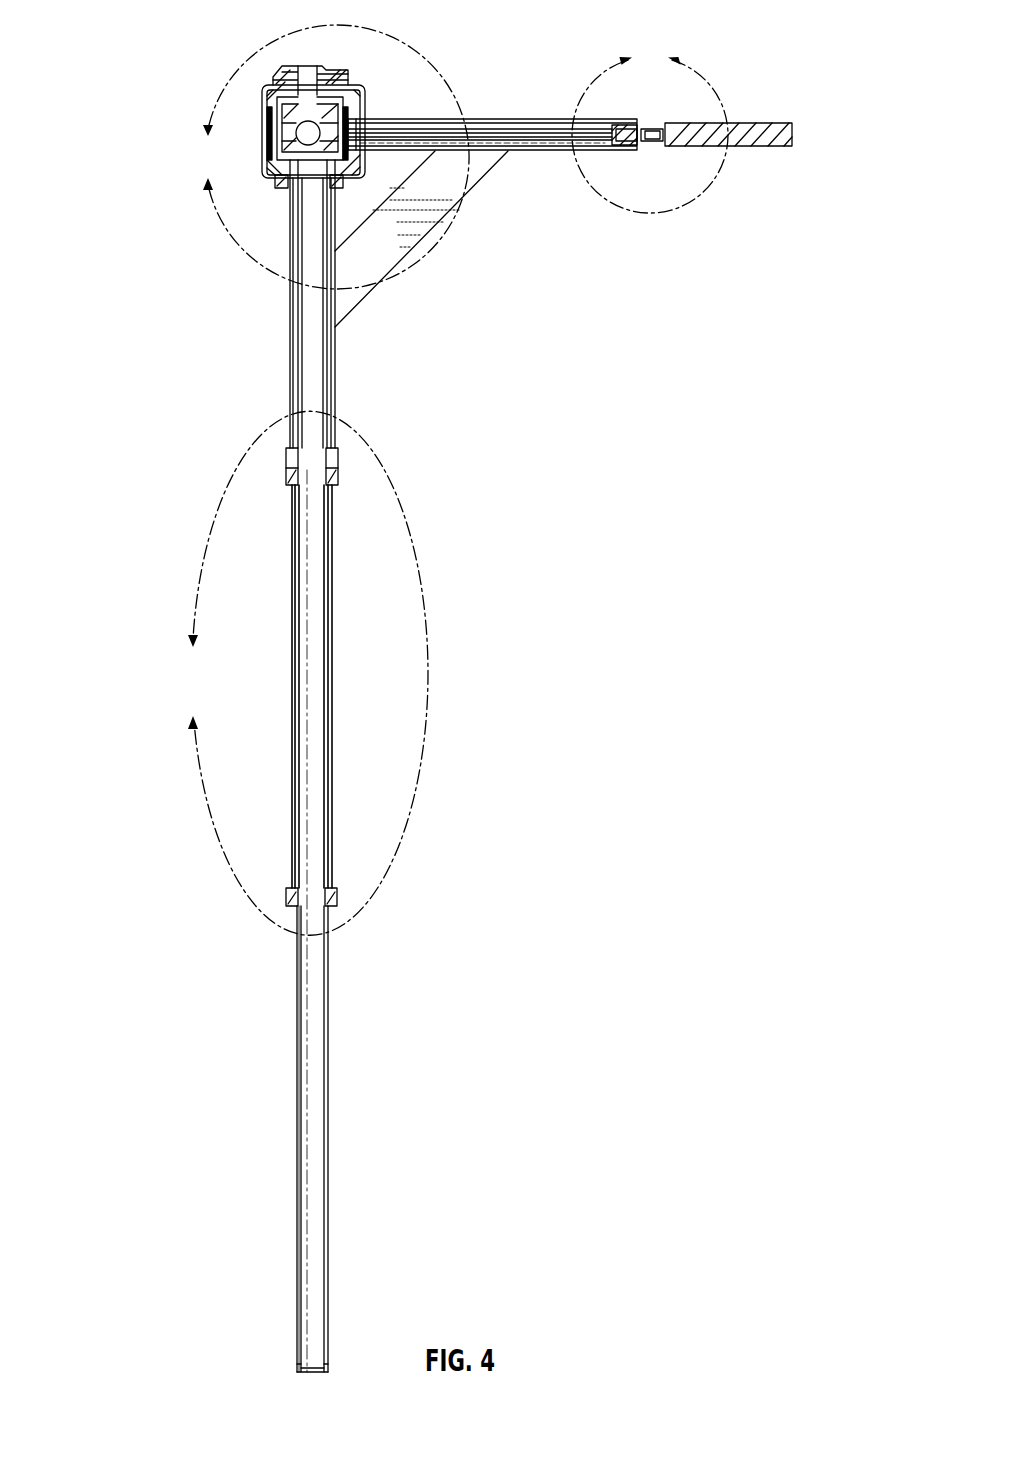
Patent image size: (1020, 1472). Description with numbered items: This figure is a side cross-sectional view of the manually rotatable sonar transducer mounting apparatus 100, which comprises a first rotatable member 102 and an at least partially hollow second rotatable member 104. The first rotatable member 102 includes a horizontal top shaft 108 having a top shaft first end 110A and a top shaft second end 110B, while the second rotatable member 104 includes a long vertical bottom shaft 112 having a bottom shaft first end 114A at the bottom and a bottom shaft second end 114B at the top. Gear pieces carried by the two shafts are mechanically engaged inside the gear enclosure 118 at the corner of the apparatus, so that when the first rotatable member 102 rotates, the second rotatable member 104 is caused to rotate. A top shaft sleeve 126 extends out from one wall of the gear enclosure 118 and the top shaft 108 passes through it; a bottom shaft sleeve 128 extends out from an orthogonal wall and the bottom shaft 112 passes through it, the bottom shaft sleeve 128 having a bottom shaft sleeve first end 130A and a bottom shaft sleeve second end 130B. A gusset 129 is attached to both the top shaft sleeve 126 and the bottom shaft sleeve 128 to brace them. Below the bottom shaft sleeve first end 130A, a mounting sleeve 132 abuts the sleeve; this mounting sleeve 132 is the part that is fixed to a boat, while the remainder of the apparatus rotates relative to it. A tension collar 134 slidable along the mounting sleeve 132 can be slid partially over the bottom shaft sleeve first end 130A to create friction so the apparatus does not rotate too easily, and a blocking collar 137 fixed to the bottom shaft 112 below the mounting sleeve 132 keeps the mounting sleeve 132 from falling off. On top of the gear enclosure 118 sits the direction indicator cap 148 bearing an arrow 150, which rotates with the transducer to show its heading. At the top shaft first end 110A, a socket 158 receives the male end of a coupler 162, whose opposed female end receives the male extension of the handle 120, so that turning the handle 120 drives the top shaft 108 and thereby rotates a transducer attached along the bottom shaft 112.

The manually rotatable sonar transducer mounting apparatus 100 is at (153, 66).
The first rotatable member 102 is at (481, 121).
The second rotatable member 104 is at (331, 1110).
The top shaft 108 is at (546, 121).
The top shaft first end 110A is at (621, 126).
The top shaft second end 110B is at (357, 128).
The bottom shaft 112 is at (331, 974).
The bottom shaft first end 114A is at (303, 1368).
The bottom shaft second end 114B is at (288, 184).
The gear enclosure 118 is at (272, 85).
The handle 120 is at (761, 123).
The top shaft sleeve 126 is at (528, 152).
The bottom shaft sleeve 128 is at (289, 293).
The gusset 129 is at (378, 253).
The bottom shaft sleeve first end 130A is at (338, 471).
The bottom shaft sleeve second end 130B is at (298, 186).
The mounting sleeve 132 is at (331, 686).
The tension collar 134 is at (289, 479).
The blocking collar 137 is at (338, 899).
The direction indicator cap 148 is at (288, 75).
The arrow 150 is at (346, 78).
The socket 158 is at (616, 145).
The coupler 162 is at (657, 142).